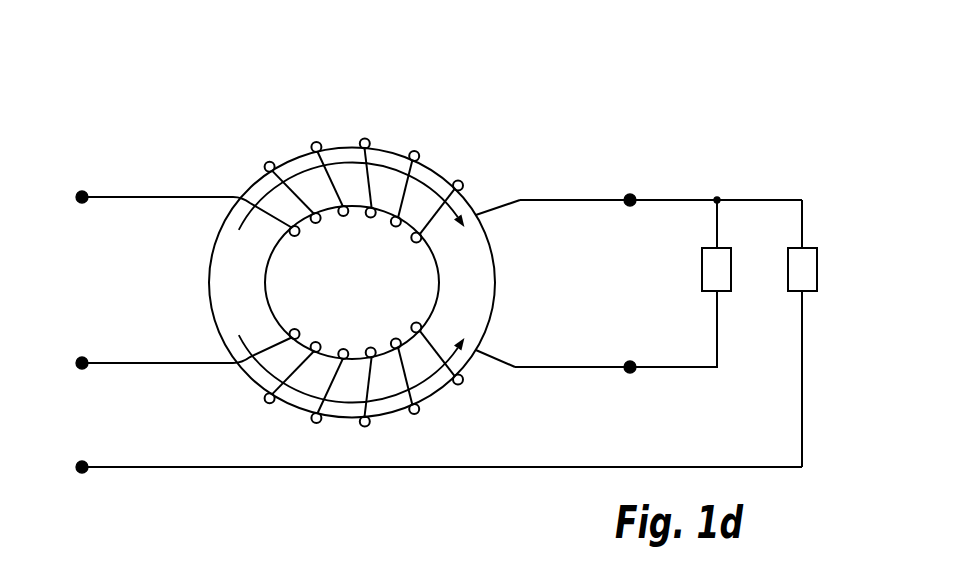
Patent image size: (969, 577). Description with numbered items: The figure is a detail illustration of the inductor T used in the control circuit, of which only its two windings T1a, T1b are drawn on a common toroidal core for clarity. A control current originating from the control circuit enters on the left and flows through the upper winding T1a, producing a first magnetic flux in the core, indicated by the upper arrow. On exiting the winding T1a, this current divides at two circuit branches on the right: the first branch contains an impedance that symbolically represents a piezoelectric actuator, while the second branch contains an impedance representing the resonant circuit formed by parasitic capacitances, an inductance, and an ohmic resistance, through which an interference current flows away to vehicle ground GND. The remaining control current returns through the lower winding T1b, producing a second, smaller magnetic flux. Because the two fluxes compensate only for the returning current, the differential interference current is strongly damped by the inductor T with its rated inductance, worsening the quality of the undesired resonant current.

The inductor T is at (470, 136).
The winding T1a is at (341, 127).
The winding T1b is at (339, 441).
The vehicle ground GND is at (439, 482).